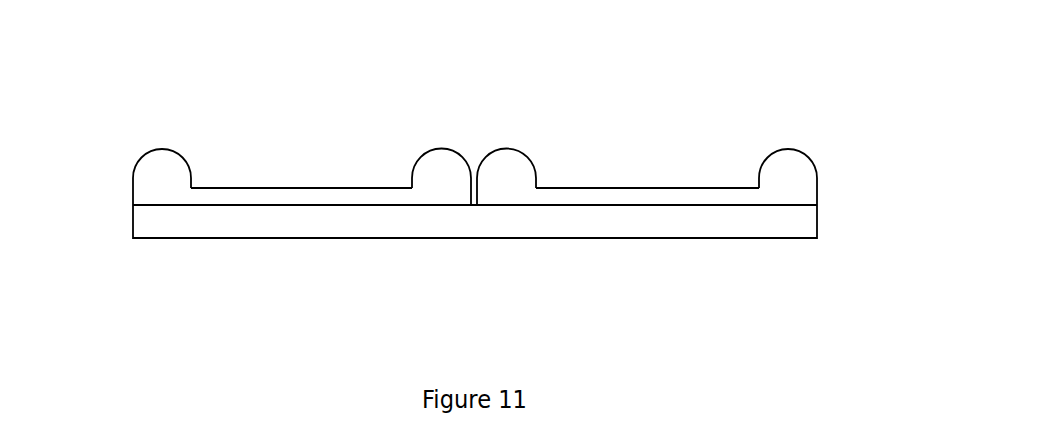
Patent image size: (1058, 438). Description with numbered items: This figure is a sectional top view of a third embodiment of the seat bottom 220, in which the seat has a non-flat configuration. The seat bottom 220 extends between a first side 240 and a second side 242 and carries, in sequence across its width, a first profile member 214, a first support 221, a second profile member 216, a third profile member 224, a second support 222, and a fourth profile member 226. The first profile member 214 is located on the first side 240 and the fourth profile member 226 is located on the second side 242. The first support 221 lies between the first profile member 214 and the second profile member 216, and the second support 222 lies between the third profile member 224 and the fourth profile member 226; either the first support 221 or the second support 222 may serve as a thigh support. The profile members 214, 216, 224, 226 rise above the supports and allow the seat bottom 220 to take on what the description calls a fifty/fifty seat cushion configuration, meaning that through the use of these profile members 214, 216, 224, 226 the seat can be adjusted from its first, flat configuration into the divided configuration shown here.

The first side 240 is at (92, 152).
The second side 242 is at (842, 187).
The first profile member 214 is at (168, 153).
The second profile member 216 is at (445, 156).
The first support 221 is at (268, 190).
The third profile member 224 is at (514, 156).
The second support 222 is at (607, 130).
The seat bottom 220 is at (673, 188).
The fourth profile member 226 is at (802, 157).